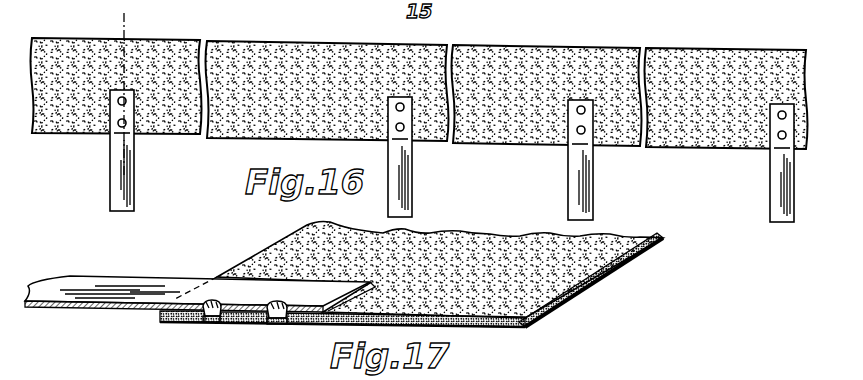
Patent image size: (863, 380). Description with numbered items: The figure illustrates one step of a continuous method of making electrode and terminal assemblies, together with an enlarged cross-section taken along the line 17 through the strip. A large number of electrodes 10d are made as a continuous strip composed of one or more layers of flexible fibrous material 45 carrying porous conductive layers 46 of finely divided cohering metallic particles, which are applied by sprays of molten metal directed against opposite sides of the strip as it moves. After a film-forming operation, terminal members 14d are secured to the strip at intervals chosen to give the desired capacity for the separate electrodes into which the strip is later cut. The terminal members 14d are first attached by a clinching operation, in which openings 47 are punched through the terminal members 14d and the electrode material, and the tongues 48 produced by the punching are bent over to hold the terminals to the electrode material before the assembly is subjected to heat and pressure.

In FIG. 16, the electrode 10d is at (292, 40).
In FIG. 17, the electrode 10d is at (584, 265).
In FIG. 16, the terminal member 14d is at (118, 193).
In FIG. 17, the terminal member 14d is at (66, 310).
In FIG. 16, the section line 17 is at (126, 22).
In FIG. 17, the flexible fibrous material 45 is at (491, 327).
In FIG. 17, the porous conductive layer 46 is at (520, 308).
In FIG. 17, the opening 47 is at (218, 302).
In FIG. 17, the tongue 48 is at (209, 323).